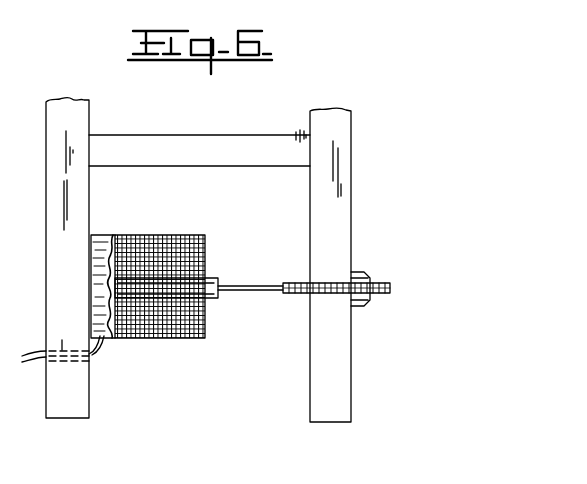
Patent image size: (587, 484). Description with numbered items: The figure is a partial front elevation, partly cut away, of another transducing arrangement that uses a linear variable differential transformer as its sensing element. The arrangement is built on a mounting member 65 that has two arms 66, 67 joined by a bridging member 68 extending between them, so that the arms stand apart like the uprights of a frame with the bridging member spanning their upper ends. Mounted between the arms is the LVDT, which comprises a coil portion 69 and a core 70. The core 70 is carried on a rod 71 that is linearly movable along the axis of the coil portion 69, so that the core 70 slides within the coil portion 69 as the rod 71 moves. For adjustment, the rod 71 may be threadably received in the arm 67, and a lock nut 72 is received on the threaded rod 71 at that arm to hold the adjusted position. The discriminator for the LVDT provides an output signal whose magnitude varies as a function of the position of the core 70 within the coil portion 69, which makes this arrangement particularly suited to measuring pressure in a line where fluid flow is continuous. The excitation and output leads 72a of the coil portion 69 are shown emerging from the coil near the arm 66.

The mounting member 65 is at (202, 256).
The arm 66 is at (53, 201).
The arm 67 is at (340, 234).
The bridging member 68 is at (196, 147).
The coil portion 69 is at (187, 246).
The core 70 is at (213, 282).
The rod 71 is at (285, 297).
The lock nut 72 is at (357, 274).
The leads 72a is at (97, 345).